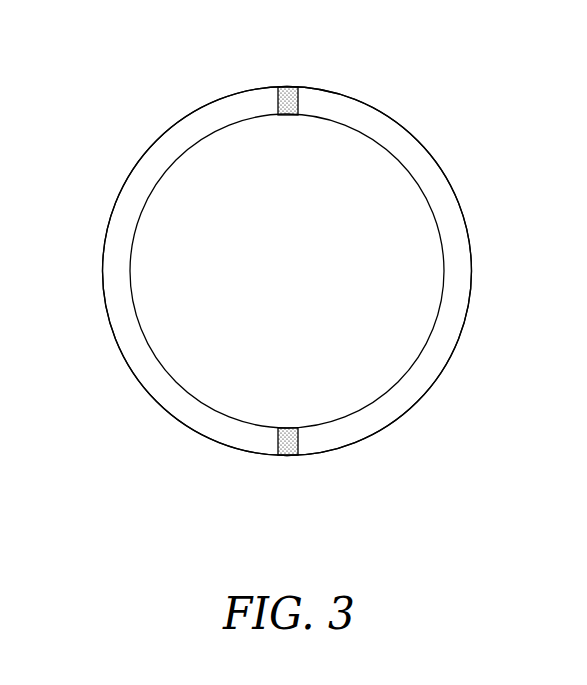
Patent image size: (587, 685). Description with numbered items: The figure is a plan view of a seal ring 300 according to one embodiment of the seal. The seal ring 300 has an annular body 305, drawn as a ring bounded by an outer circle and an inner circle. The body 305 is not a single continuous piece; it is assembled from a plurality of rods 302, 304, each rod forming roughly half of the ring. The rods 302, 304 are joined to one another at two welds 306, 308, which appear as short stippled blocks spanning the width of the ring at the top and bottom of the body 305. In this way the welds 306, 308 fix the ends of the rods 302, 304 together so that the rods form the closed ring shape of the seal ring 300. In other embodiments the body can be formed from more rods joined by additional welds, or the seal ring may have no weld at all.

The seal ring 300 is at (130, 68).
The rod 302 is at (452, 178).
The rod 304 is at (100, 258).
The body 305 is at (403, 130).
The weld 306 is at (288, 85).
The weld 308 is at (288, 457).